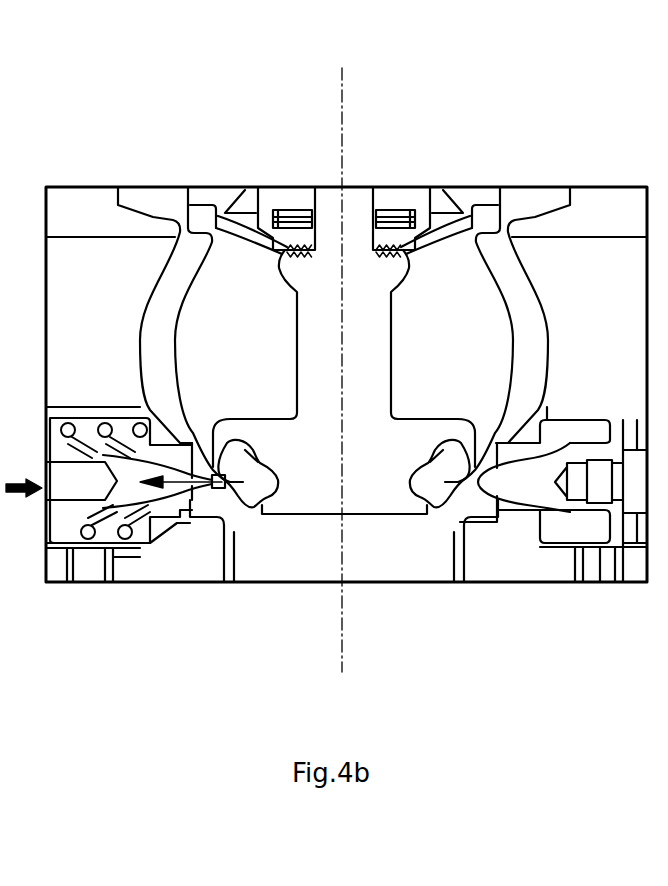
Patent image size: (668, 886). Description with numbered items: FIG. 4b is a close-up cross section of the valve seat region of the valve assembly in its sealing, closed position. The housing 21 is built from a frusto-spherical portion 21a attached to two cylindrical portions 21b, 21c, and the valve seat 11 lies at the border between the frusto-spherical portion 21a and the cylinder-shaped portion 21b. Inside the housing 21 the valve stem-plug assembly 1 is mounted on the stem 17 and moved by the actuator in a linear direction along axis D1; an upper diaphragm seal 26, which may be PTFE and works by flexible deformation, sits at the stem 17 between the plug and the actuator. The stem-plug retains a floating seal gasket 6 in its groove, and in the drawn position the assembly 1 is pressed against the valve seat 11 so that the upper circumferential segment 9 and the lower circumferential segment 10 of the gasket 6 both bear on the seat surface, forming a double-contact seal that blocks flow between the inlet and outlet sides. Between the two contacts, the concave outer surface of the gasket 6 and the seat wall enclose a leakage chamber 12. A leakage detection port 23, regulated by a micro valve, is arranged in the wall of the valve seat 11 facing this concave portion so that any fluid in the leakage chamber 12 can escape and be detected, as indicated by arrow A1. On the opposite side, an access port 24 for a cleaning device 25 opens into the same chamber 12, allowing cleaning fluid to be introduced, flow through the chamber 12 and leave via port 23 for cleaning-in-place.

The valve stem-plug assembly 1 is at (363, 368).
The floating seal gasket 6 is at (430, 480).
The upper circumferential segment 9 is at (473, 468).
The lower circumferential segment 10 is at (457, 484).
The valve seat 11 is at (206, 470).
The leakage chamber 12 is at (465, 497).
The stem 17 is at (358, 218).
The housing 21 is at (558, 326).
The frusto-spherical portion 21a is at (518, 283).
The cylindrical portion 21b is at (232, 573).
The cylindrical portion 21c is at (163, 207).
The leakage detection port 23 is at (218, 488).
The access port 24 is at (503, 513).
The cleaning device 25 is at (543, 473).
The upper diaphragm seal 26 is at (243, 240).
The arrow A1 is at (178, 486).
The axis D1 is at (340, 350).